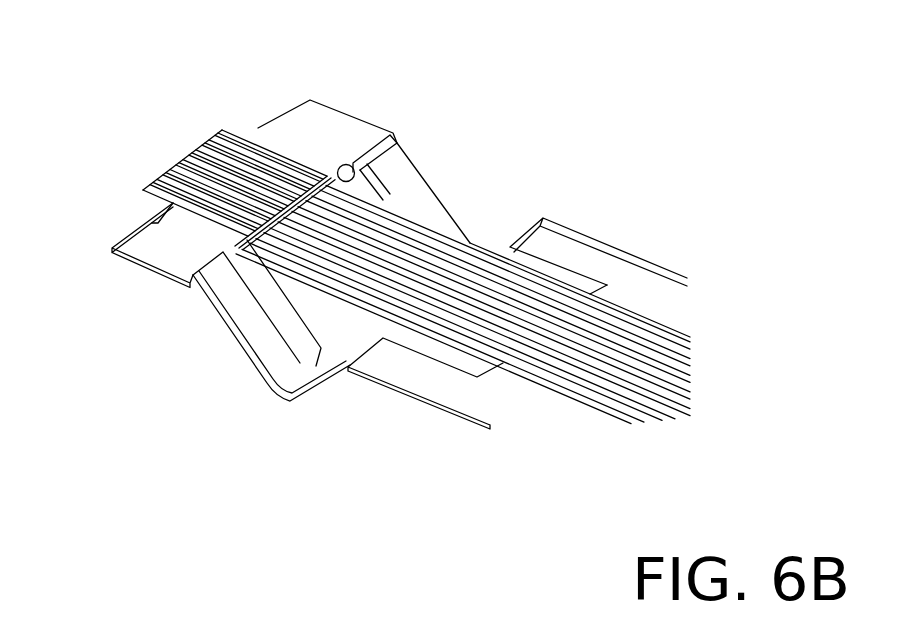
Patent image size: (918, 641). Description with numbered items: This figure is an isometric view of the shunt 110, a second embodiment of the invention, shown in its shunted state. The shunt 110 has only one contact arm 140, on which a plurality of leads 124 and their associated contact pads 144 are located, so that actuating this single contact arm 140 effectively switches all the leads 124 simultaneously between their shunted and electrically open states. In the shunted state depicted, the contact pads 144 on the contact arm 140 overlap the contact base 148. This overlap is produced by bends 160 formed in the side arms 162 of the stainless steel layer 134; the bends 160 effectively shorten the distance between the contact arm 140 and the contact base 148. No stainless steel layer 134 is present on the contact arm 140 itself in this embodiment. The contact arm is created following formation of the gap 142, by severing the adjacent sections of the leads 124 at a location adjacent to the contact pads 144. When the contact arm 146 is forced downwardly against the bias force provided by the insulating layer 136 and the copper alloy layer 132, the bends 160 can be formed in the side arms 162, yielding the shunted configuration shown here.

The shunt 110 is at (415, 126).
The leads 124 is at (210, 200).
The copper alloy layer 132 is at (170, 178).
The stainless steel layer 134 is at (577, 238).
The insulating layer 136 is at (617, 307).
The contact arm 140 is at (432, 220).
The gap 142 is at (330, 345).
The contact pads 144 is at (333, 218).
The contact arm 146 is at (273, 400).
The contact base 148 is at (339, 164).
The bends 160 is at (290, 410).
The side arms 162 is at (363, 260).